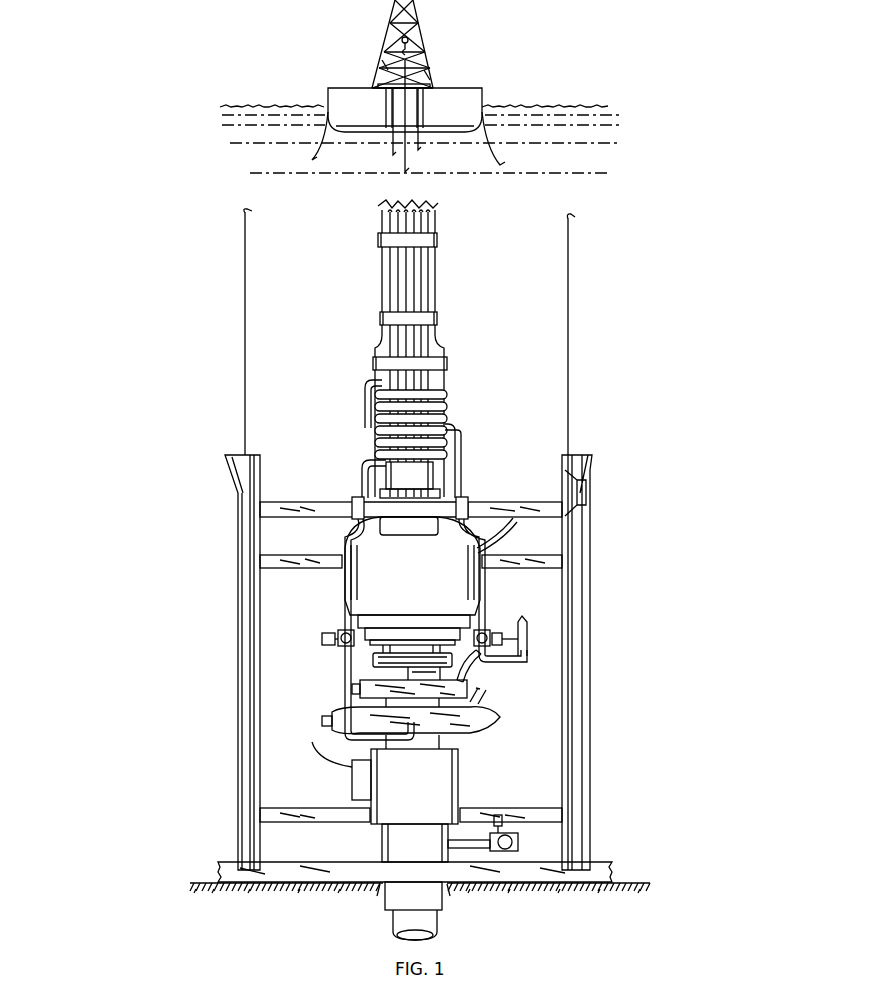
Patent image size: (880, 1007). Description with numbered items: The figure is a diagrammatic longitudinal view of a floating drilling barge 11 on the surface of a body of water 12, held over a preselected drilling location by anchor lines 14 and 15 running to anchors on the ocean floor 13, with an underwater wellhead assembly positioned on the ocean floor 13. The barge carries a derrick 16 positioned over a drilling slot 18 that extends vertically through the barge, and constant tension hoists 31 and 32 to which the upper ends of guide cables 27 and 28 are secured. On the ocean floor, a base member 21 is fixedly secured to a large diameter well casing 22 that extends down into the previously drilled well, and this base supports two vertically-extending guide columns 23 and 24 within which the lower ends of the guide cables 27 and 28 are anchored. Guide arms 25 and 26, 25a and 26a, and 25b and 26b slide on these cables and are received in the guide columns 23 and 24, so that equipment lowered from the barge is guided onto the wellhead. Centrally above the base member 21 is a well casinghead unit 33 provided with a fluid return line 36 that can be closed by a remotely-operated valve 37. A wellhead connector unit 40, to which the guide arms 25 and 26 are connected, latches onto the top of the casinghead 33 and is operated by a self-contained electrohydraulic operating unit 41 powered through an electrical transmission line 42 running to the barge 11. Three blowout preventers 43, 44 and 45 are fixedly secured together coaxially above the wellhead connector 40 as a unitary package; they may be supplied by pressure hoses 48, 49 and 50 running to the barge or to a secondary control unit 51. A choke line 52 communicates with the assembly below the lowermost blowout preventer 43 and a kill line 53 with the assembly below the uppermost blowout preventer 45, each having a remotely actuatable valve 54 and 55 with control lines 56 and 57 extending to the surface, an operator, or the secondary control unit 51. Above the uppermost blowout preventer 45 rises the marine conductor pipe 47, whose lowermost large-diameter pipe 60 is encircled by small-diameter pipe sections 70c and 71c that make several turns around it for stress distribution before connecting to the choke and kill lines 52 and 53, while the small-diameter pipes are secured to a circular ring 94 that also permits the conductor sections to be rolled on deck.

The drilling barge 11 is at (468, 88).
The body of water 12 is at (588, 104).
The ocean floor 13 is at (620, 878).
The anchor line 14 is at (320, 138).
The anchor line 15 is at (490, 136).
The derrick 16 is at (418, 25).
The drilling slot 18 is at (412, 80).
The base member 21 is at (275, 866).
The well casing 22 is at (425, 904).
The guide column 23 is at (235, 641).
The guide column 24 is at (592, 674).
The guide arm 25 is at (272, 808).
The guide arm 25a is at (272, 555).
The guide arm 25b is at (268, 508).
The guide arm 26 is at (530, 808).
The guide arm 26a is at (563, 560).
The guide arm 26b is at (553, 502).
The guide cable 27 is at (392, 155).
The guide cable 28 is at (420, 148).
The constant tension hoist 31 is at (380, 64).
The constant tension hoist 32 is at (430, 80).
The well casinghead unit 33 is at (423, 851).
The fluid return line 36 is at (460, 840).
The remotely-operated valve 37 is at (518, 838).
The wellhead connector unit 40 is at (423, 791).
The electrohydraulic operating unit 41 is at (352, 781).
The electrical transmission line 42 is at (310, 749).
The blowout preventer 43 is at (470, 735).
The blowout preventer 44 is at (467, 691).
The blowout preventer 45 is at (422, 591).
The marine conductor pipe 47 is at (407, 170).
The pressure hose 48 is at (488, 701).
The pressure hose 49 is at (482, 678).
The pressure hose 50 is at (516, 520).
The secondary control unit 51 is at (528, 656).
The choke line 52 is at (338, 592).
The kill line 53 is at (500, 585).
The remotely actuatable valve 54 is at (338, 636).
The remotely actuatable valve 55 is at (486, 630).
The pressure hose or electrical transmission line 56 is at (320, 640).
The pressure hose or electrical transmission line 57 is at (530, 626).
The large-diameter pipe 60 is at (386, 476).
The small-diameter pipe section 70c is at (358, 483).
The small-diameter pipe section 71c is at (463, 461).
The circular ring 94 is at (439, 240).